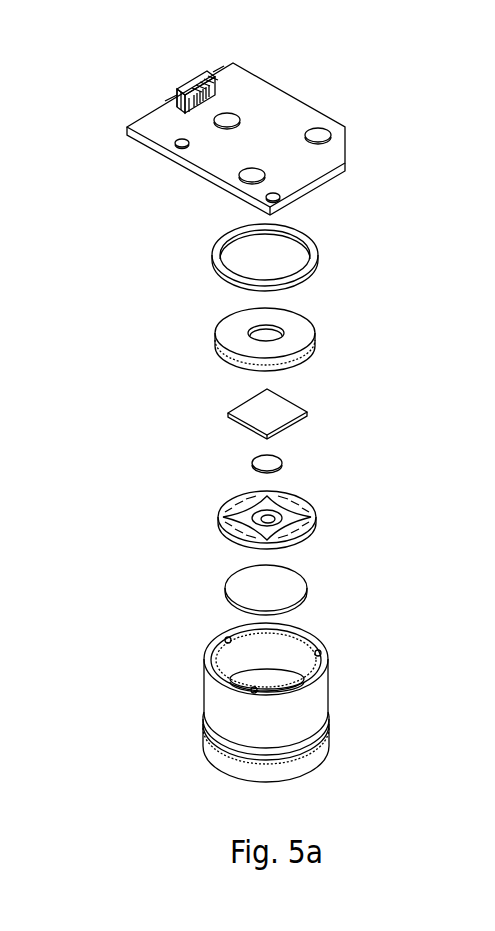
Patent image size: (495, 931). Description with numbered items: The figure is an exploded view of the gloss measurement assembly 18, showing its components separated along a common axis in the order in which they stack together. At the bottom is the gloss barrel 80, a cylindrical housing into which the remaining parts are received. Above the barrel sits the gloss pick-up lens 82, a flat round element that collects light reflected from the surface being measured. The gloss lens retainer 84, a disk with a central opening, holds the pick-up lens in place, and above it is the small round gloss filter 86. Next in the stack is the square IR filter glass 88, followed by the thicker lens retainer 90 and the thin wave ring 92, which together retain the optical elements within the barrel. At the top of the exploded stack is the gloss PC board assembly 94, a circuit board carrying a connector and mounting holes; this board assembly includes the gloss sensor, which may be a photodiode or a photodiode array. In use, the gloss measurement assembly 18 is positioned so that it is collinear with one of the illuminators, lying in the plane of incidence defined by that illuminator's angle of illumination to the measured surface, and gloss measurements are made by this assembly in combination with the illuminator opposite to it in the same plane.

The gloss measurement assembly 18 is at (143, 303).
The gloss barrel 80 is at (332, 683).
The gloss pick-up lens 82 is at (287, 595).
The gloss lens retainer 84 is at (295, 502).
The gloss filter 86 is at (257, 457).
The IR filter glass 88 is at (295, 412).
The lens retainer 90 is at (303, 337).
The wave ring 92 is at (312, 262).
The gloss PC board assembly 94 is at (285, 93).